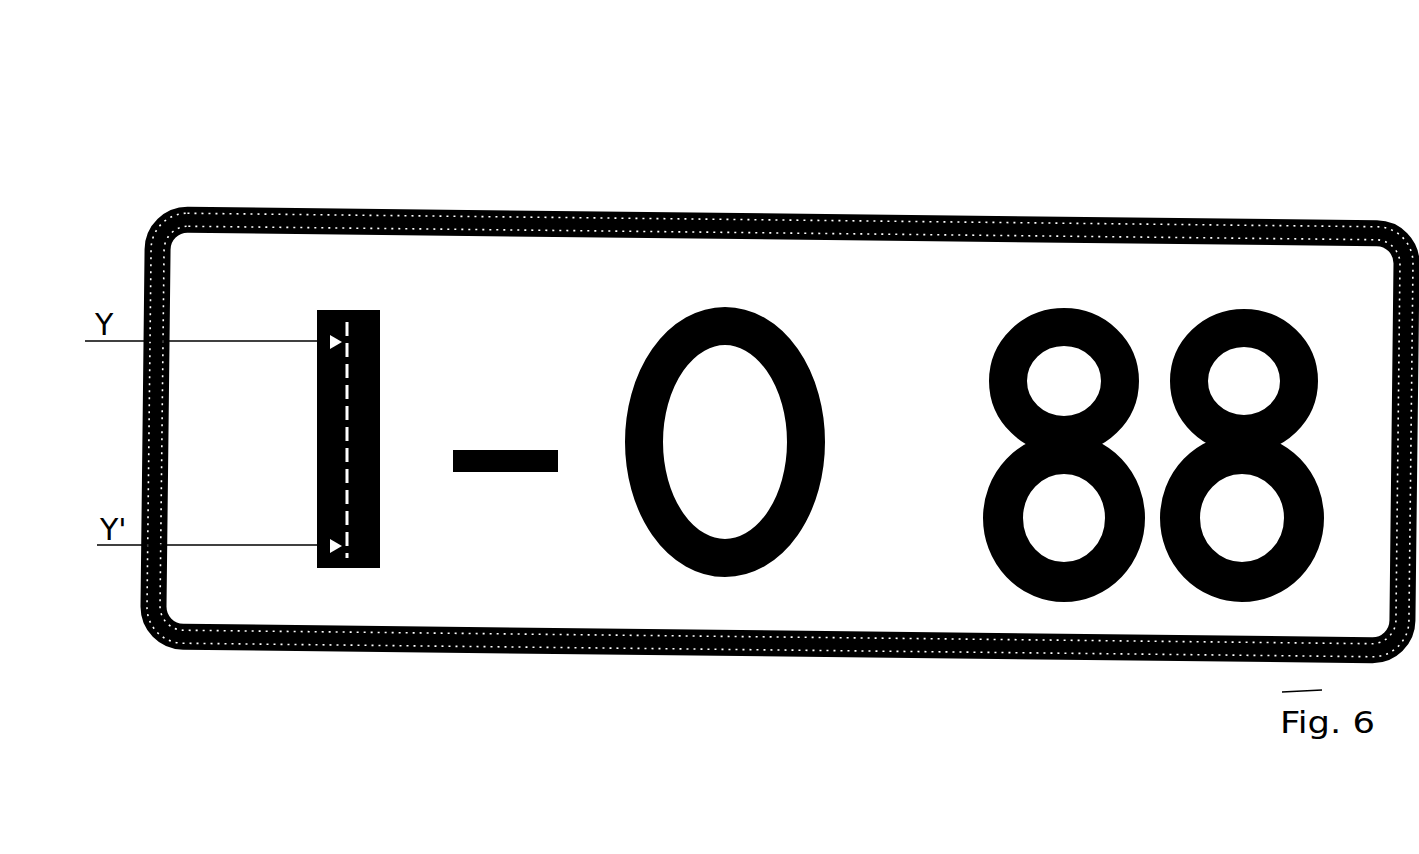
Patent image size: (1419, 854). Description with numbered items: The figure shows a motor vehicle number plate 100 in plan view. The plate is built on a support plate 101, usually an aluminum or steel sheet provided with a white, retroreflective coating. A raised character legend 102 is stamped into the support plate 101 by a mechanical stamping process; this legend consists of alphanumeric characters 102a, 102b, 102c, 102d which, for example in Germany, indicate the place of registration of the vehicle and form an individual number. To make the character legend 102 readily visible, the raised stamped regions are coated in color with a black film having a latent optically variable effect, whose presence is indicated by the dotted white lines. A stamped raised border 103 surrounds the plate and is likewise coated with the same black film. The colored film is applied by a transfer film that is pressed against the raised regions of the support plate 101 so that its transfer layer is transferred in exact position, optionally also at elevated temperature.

The motor vehicle number plate 100 is at (781, 383).
The support plate 101 is at (593, 305).
The character legend 102 is at (759, 418).
The alphanumeric character 102a is at (327, 308).
The alphanumeric character 102b is at (493, 472).
The alphanumeric character 102c is at (726, 307).
The alphanumeric character 102d is at (1240, 310).
The raised border 103 is at (823, 657).